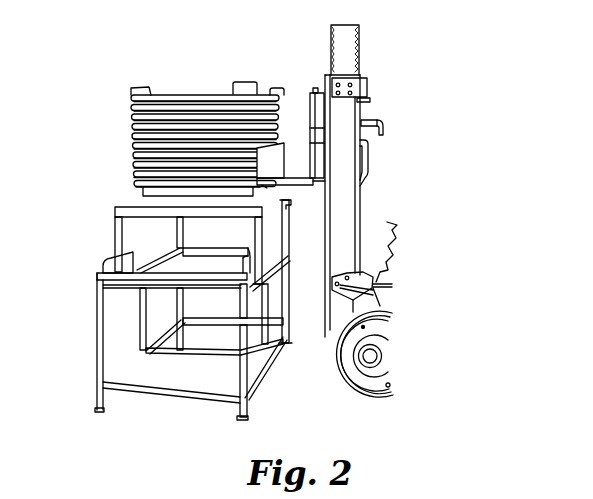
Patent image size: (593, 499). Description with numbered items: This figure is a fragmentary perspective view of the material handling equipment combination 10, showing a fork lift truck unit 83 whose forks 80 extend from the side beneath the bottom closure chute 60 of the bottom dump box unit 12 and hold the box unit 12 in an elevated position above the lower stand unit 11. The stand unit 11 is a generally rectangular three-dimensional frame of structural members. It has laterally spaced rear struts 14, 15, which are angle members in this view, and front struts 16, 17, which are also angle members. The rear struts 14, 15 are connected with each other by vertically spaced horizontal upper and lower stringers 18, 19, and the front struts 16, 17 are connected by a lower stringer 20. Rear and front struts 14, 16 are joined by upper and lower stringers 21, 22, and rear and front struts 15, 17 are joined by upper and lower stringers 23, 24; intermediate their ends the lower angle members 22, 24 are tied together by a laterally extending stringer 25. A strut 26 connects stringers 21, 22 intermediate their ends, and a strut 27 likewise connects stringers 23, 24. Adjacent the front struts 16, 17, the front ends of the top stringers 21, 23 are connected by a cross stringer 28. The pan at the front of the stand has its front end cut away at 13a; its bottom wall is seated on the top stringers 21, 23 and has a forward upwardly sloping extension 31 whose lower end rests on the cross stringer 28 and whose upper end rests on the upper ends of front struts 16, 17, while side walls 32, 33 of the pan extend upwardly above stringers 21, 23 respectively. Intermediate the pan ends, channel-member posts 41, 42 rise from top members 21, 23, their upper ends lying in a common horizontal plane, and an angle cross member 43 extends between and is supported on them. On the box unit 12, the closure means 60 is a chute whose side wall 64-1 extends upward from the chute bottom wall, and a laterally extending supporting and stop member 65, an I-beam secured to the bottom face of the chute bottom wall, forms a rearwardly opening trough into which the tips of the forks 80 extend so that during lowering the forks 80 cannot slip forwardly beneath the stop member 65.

The material handling equipment combination 10 is at (94, 331).
The lower stand unit 11 is at (95, 290).
The bottom dump box unit 12 is at (126, 128).
The cut-away front end of pan 13a is at (93, 273).
The rear strut 14 is at (290, 278).
The rear strut 15 is at (184, 234).
The front strut 16 is at (246, 372).
The front strut 17 is at (99, 370).
The upper stringer 18 is at (230, 252).
The lower stringer 19 is at (207, 324).
The lower stringer 20 is at (179, 398).
The upper stringer 21 is at (283, 268).
The lower stringer 22 is at (271, 349).
The upper stringer 23 is at (172, 257).
The lower stringer 24 is at (170, 332).
The laterally extending stringer 25 is at (193, 351).
The strut 26 is at (266, 326).
The strut 27 is at (140, 338).
The cross stringer 28 is at (112, 292).
The forward upwardly sloping extension 31 is at (128, 293).
The pan side wall 32 is at (244, 290).
The pan side wall 33 is at (120, 263).
The post 41 is at (261, 262).
The post 42 is at (118, 236).
The angle cross member 43 is at (118, 212).
The closure means 60 is at (258, 188).
The chute side wall 64-1 is at (268, 165).
The supporting and stop member 65 is at (158, 191).
The forks 80 is at (297, 188).
The fork lift truck unit 83 is at (361, 206).